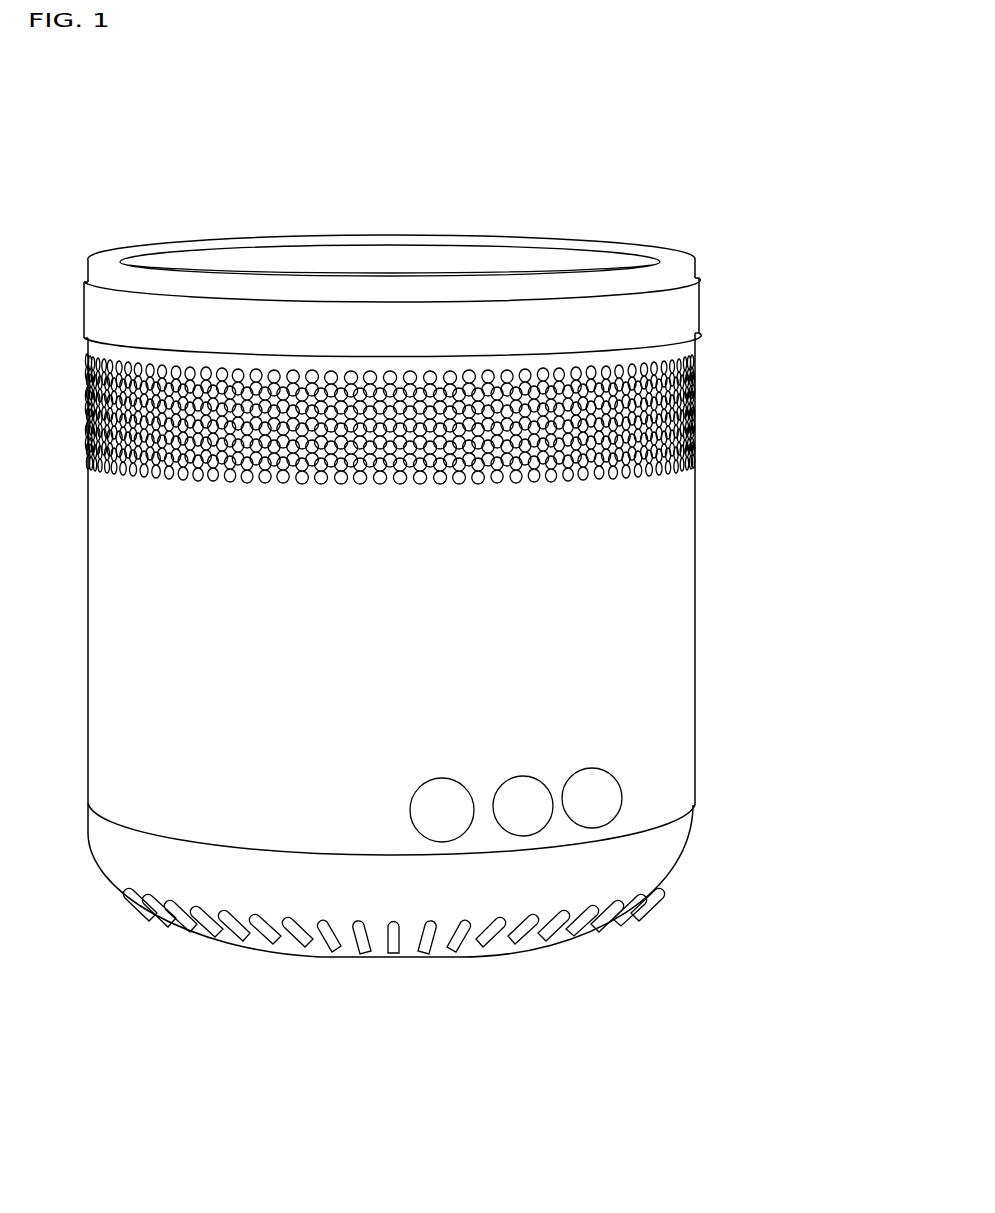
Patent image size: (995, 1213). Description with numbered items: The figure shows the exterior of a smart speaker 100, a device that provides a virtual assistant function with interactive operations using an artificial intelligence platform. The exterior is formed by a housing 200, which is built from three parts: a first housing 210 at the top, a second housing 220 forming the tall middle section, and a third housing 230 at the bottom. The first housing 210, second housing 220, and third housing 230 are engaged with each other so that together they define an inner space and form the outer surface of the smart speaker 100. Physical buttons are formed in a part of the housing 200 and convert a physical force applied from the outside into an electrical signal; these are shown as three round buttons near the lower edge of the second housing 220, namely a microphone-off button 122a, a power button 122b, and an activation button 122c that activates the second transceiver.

The smart speaker 100 is at (88, 166).
The housing 200 is at (390, 150).
The first housing 210 is at (668, 260).
The second housing 220 is at (667, 548).
The third housing 230 is at (635, 872).
The microphone-off button 122a is at (440, 822).
The power button 122b is at (526, 818).
The activation button 122c is at (599, 797).